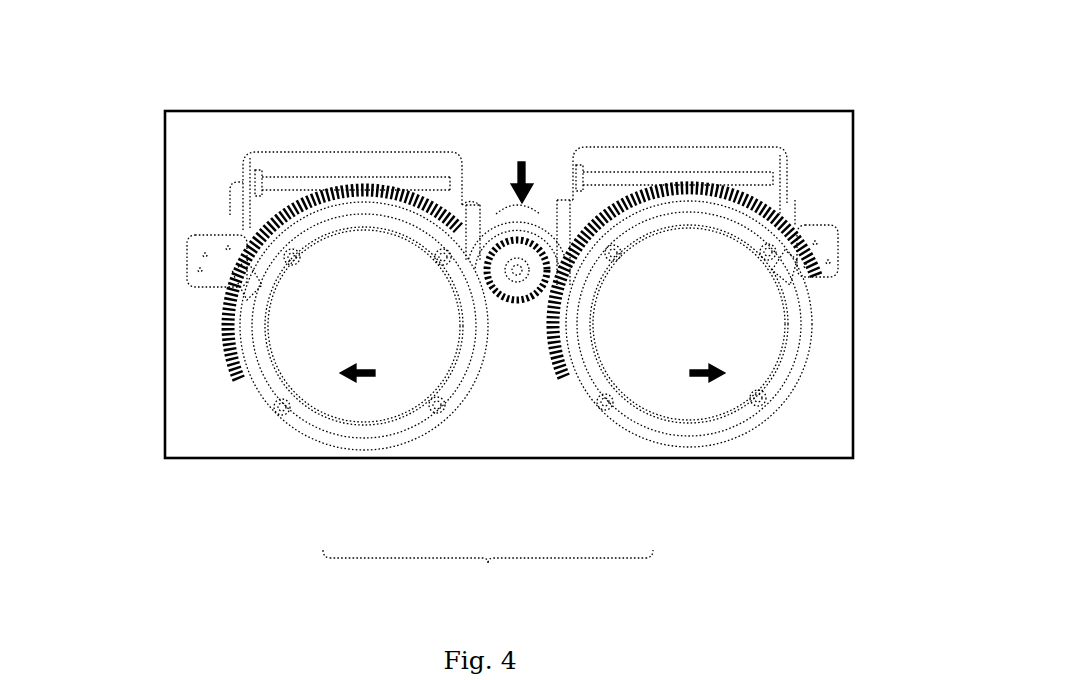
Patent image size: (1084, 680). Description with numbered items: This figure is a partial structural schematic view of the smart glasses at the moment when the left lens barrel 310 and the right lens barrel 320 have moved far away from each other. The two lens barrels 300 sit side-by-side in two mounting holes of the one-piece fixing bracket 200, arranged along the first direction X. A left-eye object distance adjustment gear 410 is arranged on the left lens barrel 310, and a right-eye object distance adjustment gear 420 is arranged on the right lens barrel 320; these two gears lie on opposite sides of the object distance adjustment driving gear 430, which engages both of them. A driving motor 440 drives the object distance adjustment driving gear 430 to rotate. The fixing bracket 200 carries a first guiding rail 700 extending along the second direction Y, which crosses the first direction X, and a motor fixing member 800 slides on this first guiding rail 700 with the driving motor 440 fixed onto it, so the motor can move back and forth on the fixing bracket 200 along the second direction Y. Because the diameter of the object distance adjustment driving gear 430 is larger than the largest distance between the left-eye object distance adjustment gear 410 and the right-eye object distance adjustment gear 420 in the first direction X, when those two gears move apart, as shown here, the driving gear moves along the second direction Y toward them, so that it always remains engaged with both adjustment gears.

The fixing bracket 200 is at (322, 153).
The lens barrels 300 is at (488, 574).
The left lens barrel 310 is at (390, 400).
The right lens barrel 320 is at (641, 377).
The left-eye object distance adjustment gear 410 is at (247, 215).
The right-eye object distance adjustment gear 420 is at (733, 195).
The object distance adjustment driving gear 430 is at (540, 250).
The driving motor 440 is at (476, 214).
The first guiding rail 700 is at (543, 203).
The motor fixing member 800 is at (518, 208).